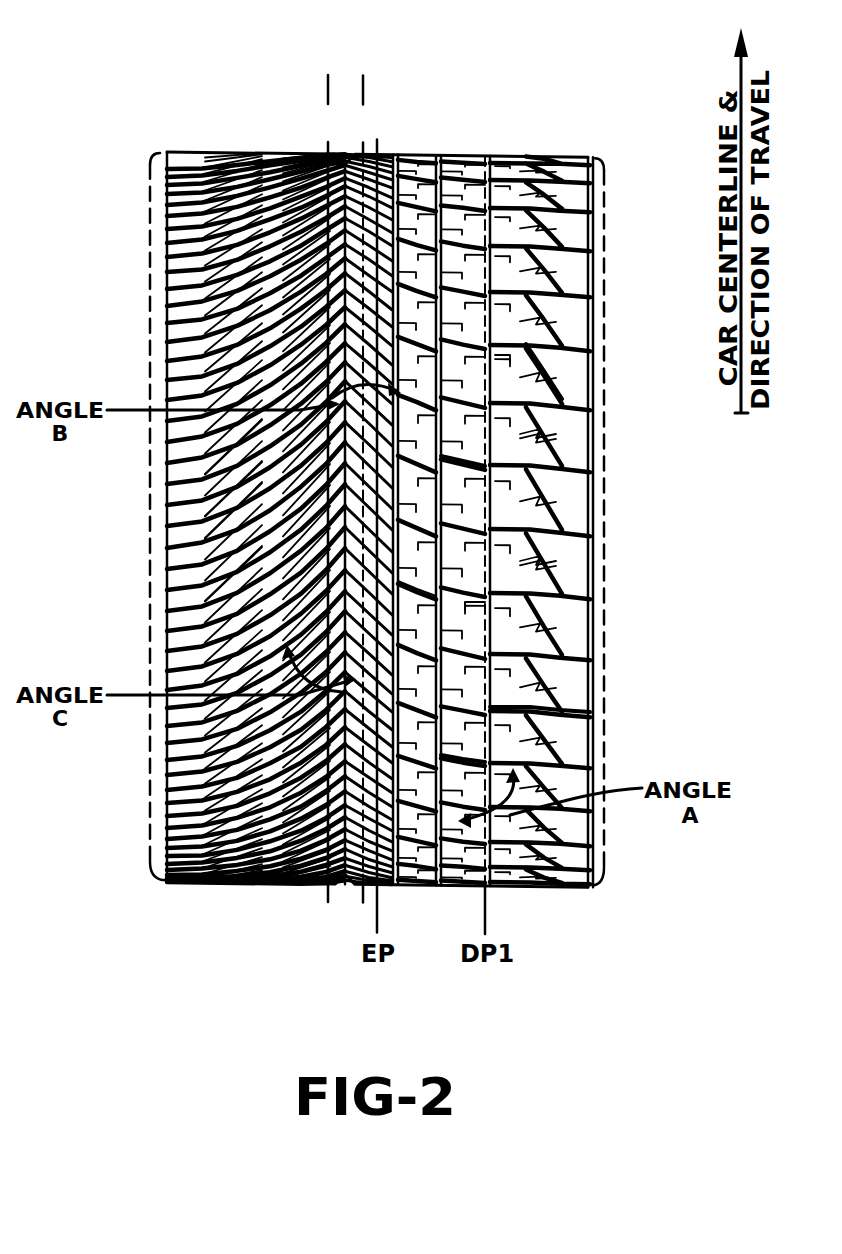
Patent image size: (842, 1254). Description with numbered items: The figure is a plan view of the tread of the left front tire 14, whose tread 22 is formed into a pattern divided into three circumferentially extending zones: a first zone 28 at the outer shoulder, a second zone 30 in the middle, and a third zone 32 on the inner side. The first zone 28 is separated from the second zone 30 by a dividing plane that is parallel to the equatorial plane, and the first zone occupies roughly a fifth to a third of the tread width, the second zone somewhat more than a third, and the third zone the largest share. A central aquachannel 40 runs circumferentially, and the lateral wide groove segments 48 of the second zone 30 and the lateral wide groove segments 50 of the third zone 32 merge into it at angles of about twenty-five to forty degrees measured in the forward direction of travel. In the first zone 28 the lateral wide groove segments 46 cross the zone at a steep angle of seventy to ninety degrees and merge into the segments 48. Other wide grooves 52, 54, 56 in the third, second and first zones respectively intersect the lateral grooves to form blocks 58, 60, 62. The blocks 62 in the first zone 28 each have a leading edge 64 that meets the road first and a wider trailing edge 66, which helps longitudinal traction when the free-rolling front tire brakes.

The front tire 14 is at (148, 62).
The tread 22 is at (210, 155).
The first zone 28 is at (584, 152).
The second zone 30 is at (345, 150).
The third zone 32 is at (167, 152).
The aquachannel 40 is at (328, 80).
The lateral wide groove segments 46 is at (570, 403).
The lateral wide groove segments 48 is at (465, 753).
The lateral wide groove segments 50 is at (245, 612).
The wide grooves 52 is at (195, 545).
The wide grooves 54 is at (482, 638).
The wide grooves 56 is at (520, 549).
The blocks 58 is at (273, 470).
The blocks 60 is at (435, 466).
The blocks 62 is at (503, 693).
The leading edge 64 is at (507, 350).
The trailing edge 66 is at (528, 426).